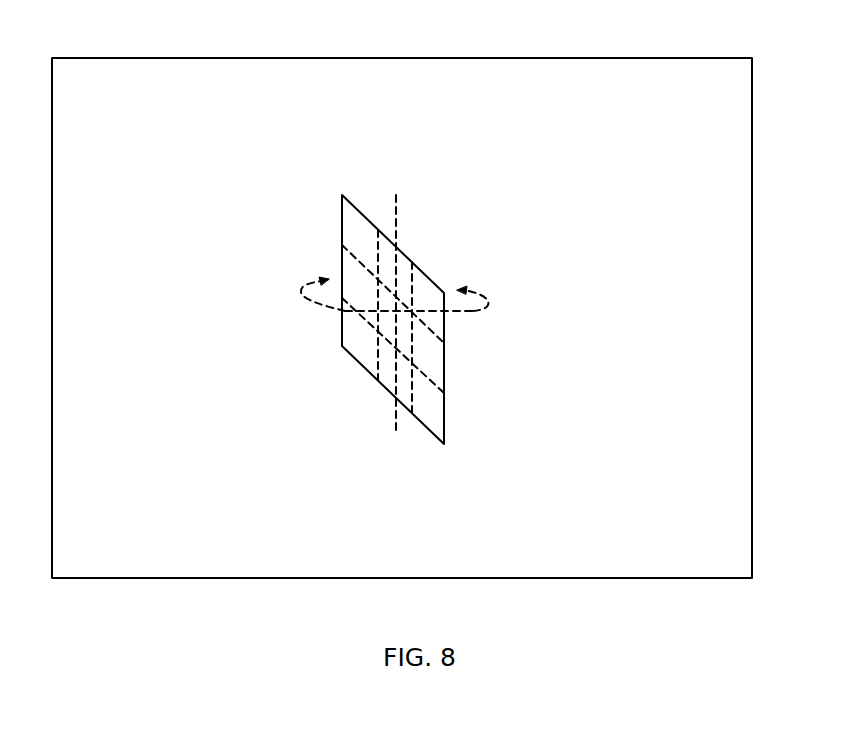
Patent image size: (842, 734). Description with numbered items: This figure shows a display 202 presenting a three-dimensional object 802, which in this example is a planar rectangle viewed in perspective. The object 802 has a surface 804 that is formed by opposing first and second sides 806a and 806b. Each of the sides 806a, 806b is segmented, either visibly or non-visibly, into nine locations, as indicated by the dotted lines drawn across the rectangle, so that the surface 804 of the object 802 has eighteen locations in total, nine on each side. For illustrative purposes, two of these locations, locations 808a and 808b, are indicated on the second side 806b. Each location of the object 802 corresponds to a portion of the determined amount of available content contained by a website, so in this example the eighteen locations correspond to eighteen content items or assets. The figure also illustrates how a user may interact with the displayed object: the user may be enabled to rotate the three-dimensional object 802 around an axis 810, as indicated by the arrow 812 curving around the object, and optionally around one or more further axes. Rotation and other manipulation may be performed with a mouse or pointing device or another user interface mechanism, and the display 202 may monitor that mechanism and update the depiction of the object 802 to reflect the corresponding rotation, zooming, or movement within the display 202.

The display 202 is at (103, 58).
The three-dimensional object 802 is at (285, 175).
The surface 804 is at (362, 228).
The first side 806a is at (335, 310).
The second side 806b is at (437, 265).
The location 808a is at (353, 342).
The location 808b is at (385, 374).
The axis 810 is at (392, 420).
The arrow 812 is at (475, 311).